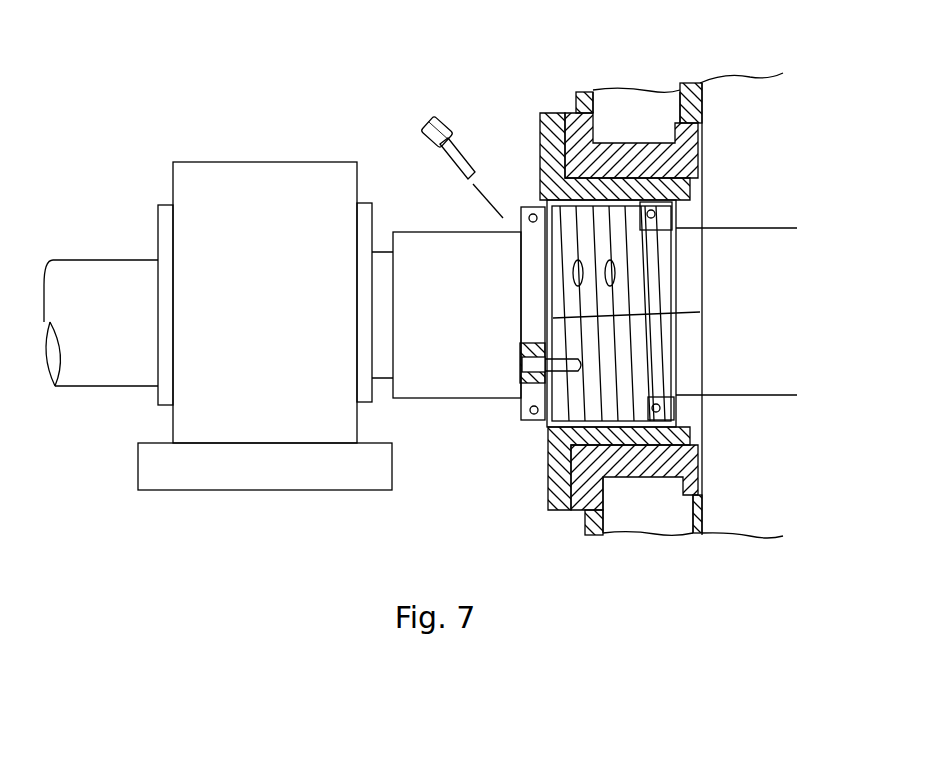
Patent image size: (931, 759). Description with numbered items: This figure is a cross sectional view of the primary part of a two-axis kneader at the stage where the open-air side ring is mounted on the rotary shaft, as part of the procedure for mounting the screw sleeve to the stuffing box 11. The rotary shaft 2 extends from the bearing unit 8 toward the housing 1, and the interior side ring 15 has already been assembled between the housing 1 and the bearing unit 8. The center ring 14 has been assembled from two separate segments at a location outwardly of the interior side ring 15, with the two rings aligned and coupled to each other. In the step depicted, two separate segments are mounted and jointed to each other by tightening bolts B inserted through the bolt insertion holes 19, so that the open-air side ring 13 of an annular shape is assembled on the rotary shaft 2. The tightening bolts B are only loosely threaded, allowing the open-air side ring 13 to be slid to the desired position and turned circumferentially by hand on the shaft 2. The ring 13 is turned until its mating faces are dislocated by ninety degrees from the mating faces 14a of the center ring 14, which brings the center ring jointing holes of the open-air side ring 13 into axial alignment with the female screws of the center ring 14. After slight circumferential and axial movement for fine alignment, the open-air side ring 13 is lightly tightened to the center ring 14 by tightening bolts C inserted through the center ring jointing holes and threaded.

The housing 1 is at (570, 92).
The rotary shaft 2 is at (84, 258).
The bearing unit 8 is at (245, 172).
The stuffing box 11 is at (540, 118).
The open-air side ring 13 is at (521, 283).
The center ring 14 is at (625, 350).
The mating faces of the center ring 14a is at (700, 312).
The interior side ring 15 is at (663, 262).
The bolt insertion holes 19 is at (518, 222).
The tightening bolts B is at (425, 130).
The tightening bolts C is at (520, 358).